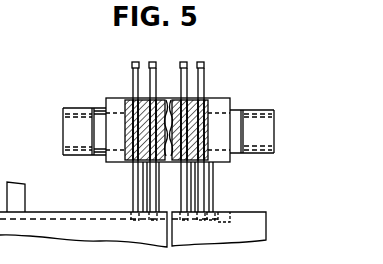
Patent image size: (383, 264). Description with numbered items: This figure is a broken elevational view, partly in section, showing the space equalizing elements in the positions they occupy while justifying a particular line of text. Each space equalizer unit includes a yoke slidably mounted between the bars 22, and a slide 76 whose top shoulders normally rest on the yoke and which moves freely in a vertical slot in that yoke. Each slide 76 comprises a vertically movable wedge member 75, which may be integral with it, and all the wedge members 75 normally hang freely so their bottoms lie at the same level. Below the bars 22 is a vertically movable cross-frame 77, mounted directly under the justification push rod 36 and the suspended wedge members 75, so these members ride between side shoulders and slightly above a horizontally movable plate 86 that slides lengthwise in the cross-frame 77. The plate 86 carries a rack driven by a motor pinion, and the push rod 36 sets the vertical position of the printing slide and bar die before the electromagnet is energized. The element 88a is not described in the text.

The slide 76 is at (181, 65).
The wedge member 75 is at (185, 205).
The bars 22 is at (79, 157).
The cross-frame 77 is at (241, 213).
The horizontally movable plate 86 is at (83, 212).
The recess 88a is at (224, 215).
The justification push rod 36 is at (25, 192).